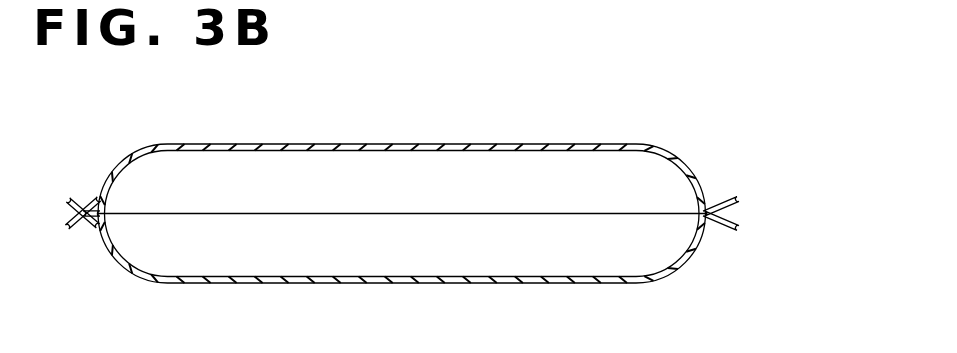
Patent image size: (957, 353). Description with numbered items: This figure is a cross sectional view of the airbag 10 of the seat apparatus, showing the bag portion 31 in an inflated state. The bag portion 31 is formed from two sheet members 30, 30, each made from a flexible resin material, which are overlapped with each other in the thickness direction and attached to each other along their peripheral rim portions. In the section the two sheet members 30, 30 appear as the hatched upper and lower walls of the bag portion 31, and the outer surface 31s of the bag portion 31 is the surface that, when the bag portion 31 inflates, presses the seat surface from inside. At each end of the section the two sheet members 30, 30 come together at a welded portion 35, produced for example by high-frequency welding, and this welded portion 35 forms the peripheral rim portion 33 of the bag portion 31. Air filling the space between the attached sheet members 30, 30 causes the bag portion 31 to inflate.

The sheet member 30 is at (436, 143).
The surface of the bag portion 31s is at (402, 214).
The bag portion 31 is at (762, 78).
The airbag 10 is at (457, 196).
The welded portion 35 is at (90, 203).
The peripheral rim portion 33 is at (420, 184).